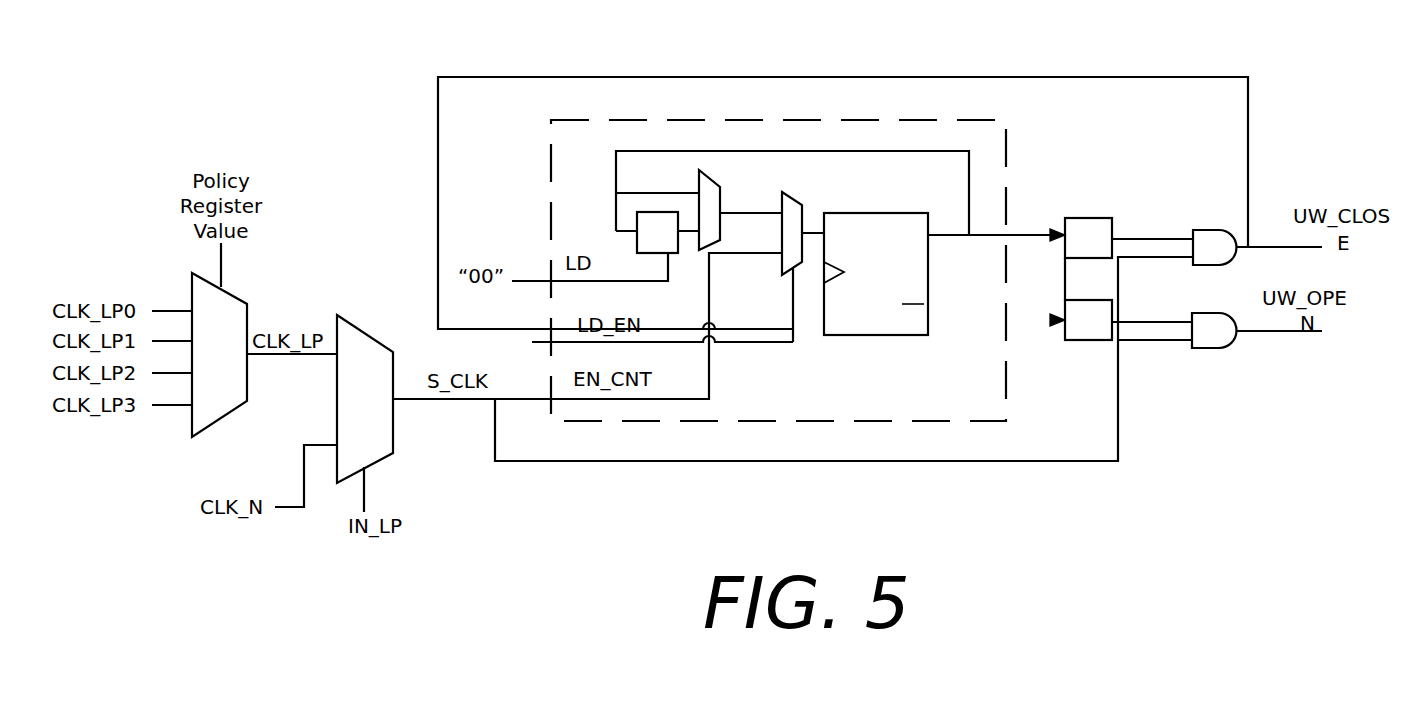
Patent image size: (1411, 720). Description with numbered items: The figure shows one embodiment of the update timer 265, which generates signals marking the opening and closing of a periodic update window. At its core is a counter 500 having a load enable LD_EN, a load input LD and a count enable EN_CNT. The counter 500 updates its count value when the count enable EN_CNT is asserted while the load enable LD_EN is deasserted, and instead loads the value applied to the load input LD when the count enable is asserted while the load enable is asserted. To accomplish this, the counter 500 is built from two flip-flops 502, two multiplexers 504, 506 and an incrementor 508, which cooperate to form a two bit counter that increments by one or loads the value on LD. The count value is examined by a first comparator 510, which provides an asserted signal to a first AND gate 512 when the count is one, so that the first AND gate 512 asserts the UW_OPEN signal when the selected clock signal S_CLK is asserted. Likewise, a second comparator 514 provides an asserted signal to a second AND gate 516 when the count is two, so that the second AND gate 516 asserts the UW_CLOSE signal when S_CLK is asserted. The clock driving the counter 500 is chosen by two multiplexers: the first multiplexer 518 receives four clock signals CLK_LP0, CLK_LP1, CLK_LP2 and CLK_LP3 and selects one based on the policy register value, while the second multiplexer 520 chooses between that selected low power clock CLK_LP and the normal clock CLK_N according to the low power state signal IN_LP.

The update timer 265 is at (1044, 77).
The first multiplexer 518 is at (248, 317).
The second multiplexer 520 is at (395, 418).
The counter 500 is at (1000, 411).
The incrementor 508 is at (636, 250).
The multiplexer 506 is at (740, 205).
The multiplexer 504 is at (796, 204).
The flip-flops 502 is at (891, 285).
The second comparator 514 is at (1095, 218).
The first comparator 510 is at (1095, 301).
The second AND gate 516 is at (1227, 258).
The first AND gate 512 is at (1225, 341).